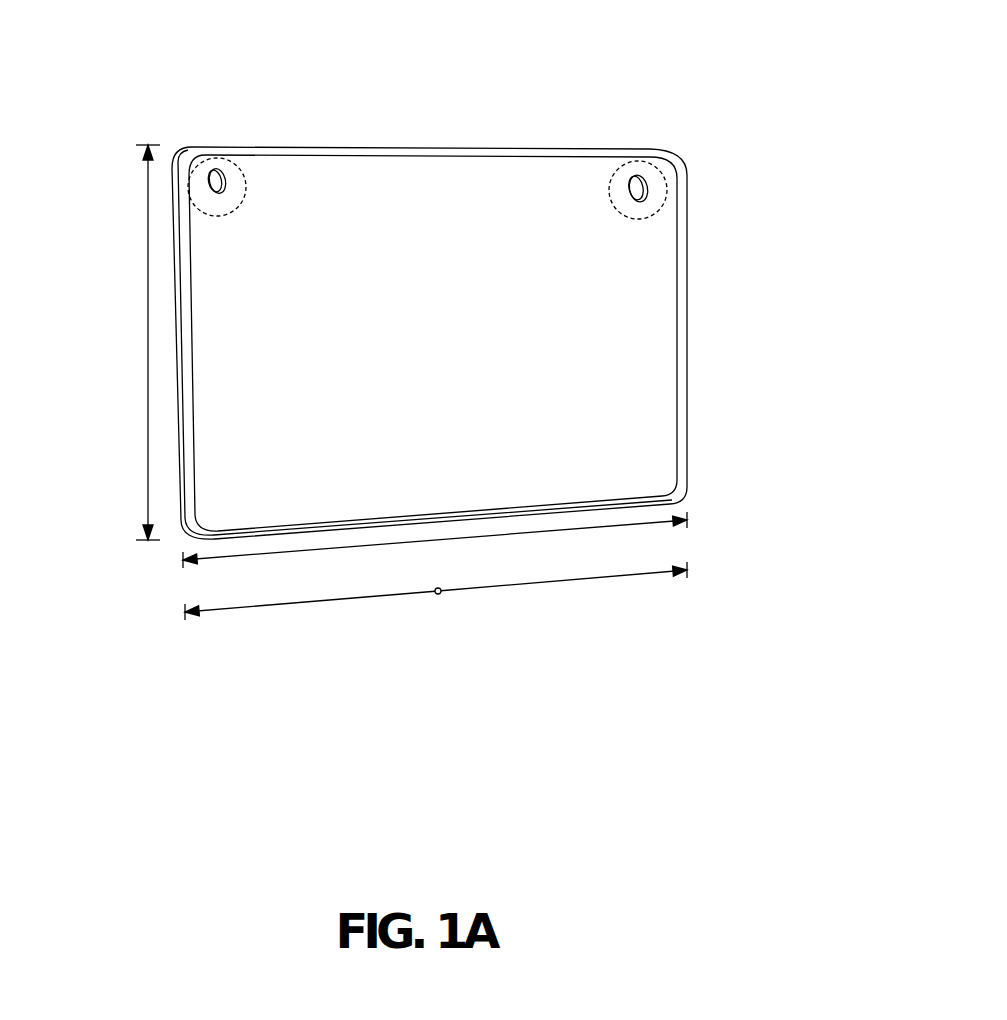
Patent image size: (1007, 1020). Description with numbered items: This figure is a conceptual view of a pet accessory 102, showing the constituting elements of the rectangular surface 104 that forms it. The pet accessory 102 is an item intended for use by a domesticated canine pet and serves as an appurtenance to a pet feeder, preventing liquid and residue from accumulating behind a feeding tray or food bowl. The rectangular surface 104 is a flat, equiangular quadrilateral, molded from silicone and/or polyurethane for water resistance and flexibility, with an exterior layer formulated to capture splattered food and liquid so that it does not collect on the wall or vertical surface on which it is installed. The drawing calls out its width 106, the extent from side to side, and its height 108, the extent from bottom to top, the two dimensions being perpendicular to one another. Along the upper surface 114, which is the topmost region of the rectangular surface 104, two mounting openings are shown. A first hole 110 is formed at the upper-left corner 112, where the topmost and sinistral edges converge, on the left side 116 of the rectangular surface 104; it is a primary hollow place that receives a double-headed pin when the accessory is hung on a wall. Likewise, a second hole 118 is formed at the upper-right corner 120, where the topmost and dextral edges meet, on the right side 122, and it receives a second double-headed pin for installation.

The pet accessory 102 is at (826, 675).
The rectangular surface 104 is at (688, 382).
The width 106 is at (523, 535).
The height 108 is at (148, 357).
The first hole 110 is at (228, 193).
The upper-left corner 112 is at (190, 146).
The upper surface 114 is at (430, 166).
The left side 116 is at (345, 600).
The second hole 118 is at (625, 198).
The upper-right corner 120 is at (657, 163).
The right side 122 is at (513, 586).